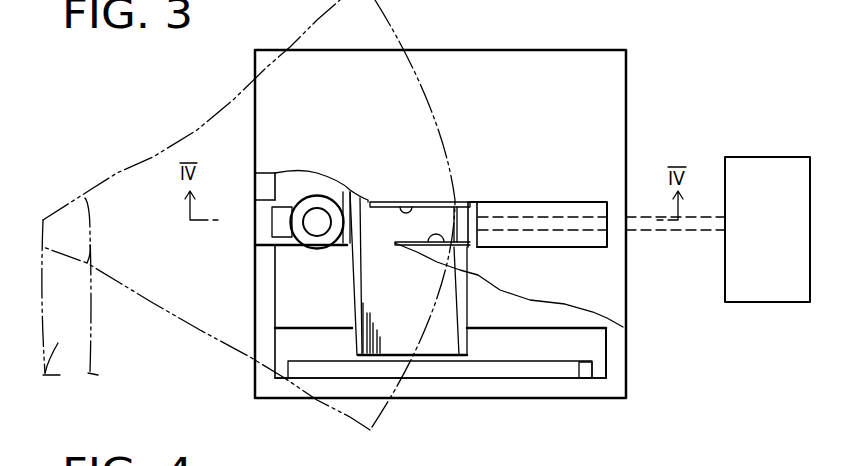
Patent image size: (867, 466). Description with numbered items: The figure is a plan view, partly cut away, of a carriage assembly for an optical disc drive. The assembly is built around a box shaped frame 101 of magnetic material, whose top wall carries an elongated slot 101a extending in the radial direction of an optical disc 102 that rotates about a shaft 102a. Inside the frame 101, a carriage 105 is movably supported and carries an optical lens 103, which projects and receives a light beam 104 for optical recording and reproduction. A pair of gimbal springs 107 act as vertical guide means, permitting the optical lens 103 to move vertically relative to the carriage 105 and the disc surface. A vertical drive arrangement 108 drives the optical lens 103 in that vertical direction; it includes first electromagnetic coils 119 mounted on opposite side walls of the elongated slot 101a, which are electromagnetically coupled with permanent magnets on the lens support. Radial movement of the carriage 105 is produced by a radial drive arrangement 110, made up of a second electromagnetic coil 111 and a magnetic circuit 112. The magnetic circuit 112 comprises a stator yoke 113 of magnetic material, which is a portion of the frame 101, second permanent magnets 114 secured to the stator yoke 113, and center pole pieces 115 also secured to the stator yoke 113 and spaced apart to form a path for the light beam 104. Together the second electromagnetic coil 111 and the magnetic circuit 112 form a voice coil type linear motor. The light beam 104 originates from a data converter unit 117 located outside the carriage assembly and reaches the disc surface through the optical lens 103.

The box shaped frame 101 is at (627, 78).
The elongated slot 101a is at (556, 201).
The optical disc 102 is at (125, 187).
The shaft 102a is at (47, 373).
The optical lens 103 is at (318, 212).
The light beam 104 is at (695, 233).
The carriage 105 is at (278, 222).
The gimbal springs 107 is at (316, 247).
The vertical drive arrangement 108 is at (470, 197).
The radial drive arrangement 110 is at (467, 347).
The second electromagnetic coil 111 is at (393, 343).
The magnetic circuit 112 is at (618, 350).
The stator yoke 113 is at (606, 392).
The second permanent magnets 114 is at (567, 353).
The center pole pieces 115 is at (290, 310).
The data converter unit 117 is at (775, 160).
The first electromagnetic coils 119 is at (410, 212).